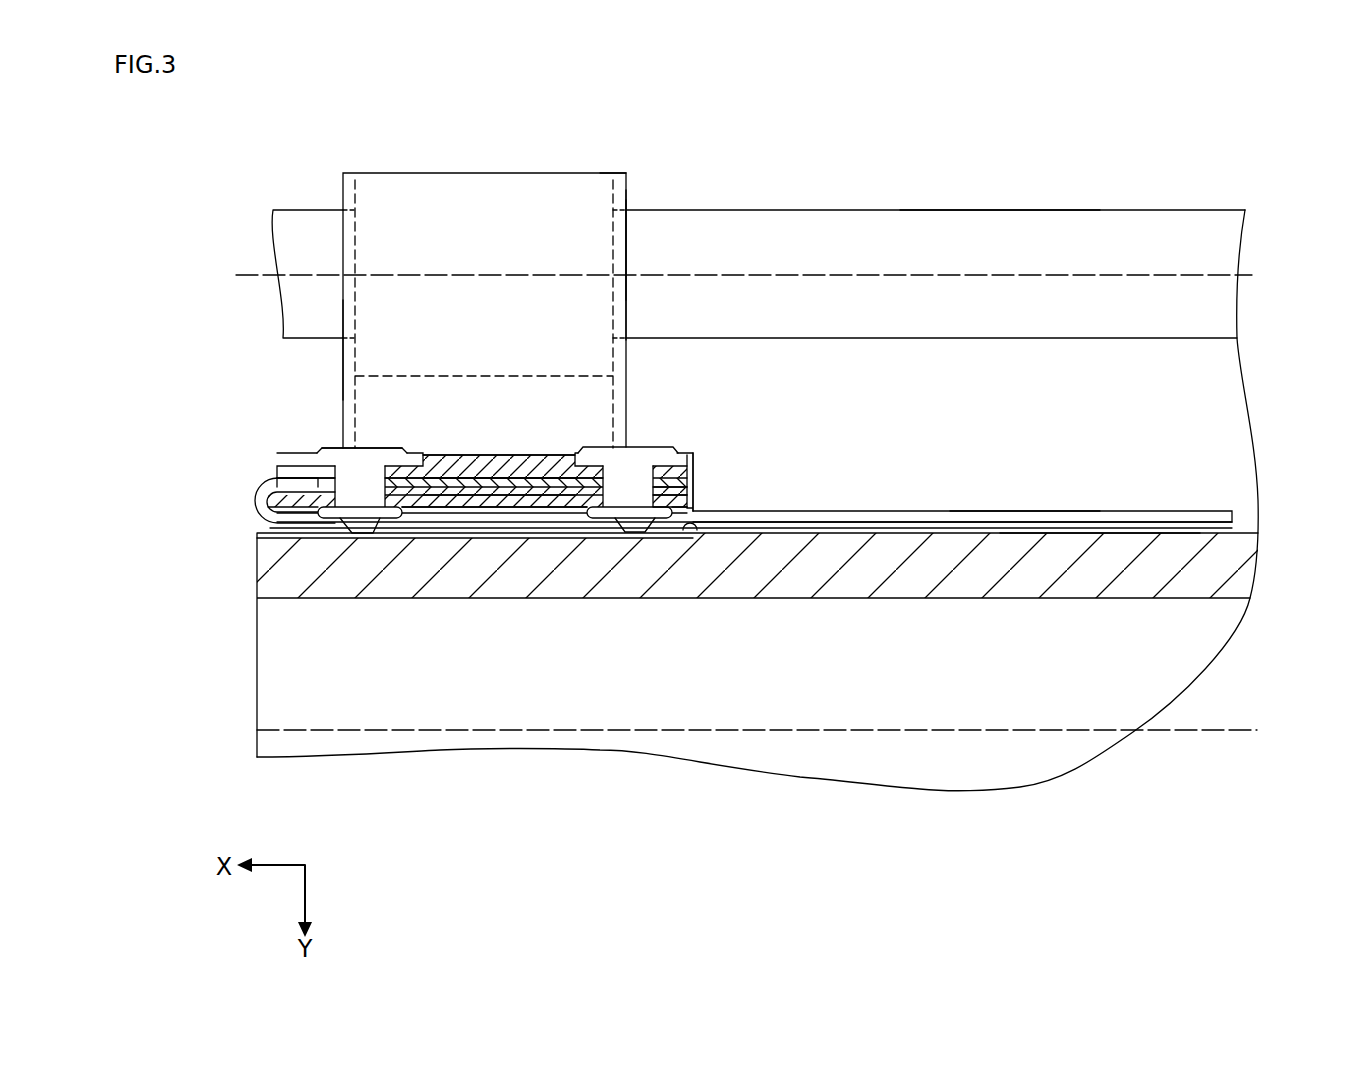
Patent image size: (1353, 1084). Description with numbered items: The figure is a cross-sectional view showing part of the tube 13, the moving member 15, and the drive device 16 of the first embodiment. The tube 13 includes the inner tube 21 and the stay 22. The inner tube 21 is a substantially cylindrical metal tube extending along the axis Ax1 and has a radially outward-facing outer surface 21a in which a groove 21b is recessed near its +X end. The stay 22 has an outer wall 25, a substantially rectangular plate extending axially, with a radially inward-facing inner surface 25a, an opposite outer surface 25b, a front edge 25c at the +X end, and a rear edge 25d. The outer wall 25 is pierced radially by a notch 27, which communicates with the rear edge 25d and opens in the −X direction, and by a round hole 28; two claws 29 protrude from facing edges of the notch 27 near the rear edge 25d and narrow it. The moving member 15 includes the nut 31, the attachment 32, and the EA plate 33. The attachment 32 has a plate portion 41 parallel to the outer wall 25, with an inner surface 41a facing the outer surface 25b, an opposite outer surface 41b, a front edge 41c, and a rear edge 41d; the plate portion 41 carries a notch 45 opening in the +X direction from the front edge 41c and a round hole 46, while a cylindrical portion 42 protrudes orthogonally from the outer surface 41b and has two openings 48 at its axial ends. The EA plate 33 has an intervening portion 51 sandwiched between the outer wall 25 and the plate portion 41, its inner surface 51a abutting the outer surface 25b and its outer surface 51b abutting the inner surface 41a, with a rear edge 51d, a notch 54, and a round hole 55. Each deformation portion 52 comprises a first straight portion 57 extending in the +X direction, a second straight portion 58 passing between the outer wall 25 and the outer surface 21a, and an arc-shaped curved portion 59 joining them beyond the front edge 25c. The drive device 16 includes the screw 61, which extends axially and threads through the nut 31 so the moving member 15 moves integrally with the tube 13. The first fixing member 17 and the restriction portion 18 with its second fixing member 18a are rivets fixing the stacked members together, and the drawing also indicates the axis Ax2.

The tube 13 is at (1255, 516).
The moving member 15 is at (634, 176).
The drive device 16 is at (1110, 206).
The first fixing member 17 is at (658, 452).
The restriction portion 18 is at (333, 458).
The second fixing member 18a is at (278, 404).
The inner tube 21 is at (1250, 575).
The outer surface 21a is at (1135, 532).
The groove 21b is at (685, 524).
The stay 22 is at (506, 480).
The outer wall 25 is at (536, 306).
The inner surface 25a is at (483, 508).
The outer surface 25b is at (468, 478).
The front edge 25c is at (264, 506).
The rear edge 25d is at (700, 500).
The notch 27 is at (710, 507).
The hole 28 is at (383, 499).
The claw 29 is at (660, 519).
The nut 31 is at (343, 172).
The attachment 32 is at (626, 200).
The EA plate 33 is at (262, 501).
The plate portion 41 is at (537, 453).
The inner surface 41a is at (546, 508).
The outer surface 41b is at (557, 453).
The front edge 41c is at (266, 473).
The rear edge 41d is at (693, 469).
The cylindrical portion 42 is at (663, 177).
The notch 45 is at (262, 472).
The hole 46 is at (622, 476).
The opening 48 is at (343, 342).
The intervening portion 51 is at (439, 487).
The inner surface 51a is at (409, 508).
The outer surface 51b is at (418, 478).
The rear edge 51d is at (707, 497).
The deformation portion 52 is at (679, 529).
The notch 54 is at (307, 487).
The hole 55 is at (605, 473).
The first straight portion 57 is at (318, 480).
The second straight portion 58 is at (1022, 510).
The curved portion 59 is at (699, 529).
The screw 61 is at (992, 237).
The axis Ax1 is at (1245, 729).
The second axis Ax2 is at (1252, 273).